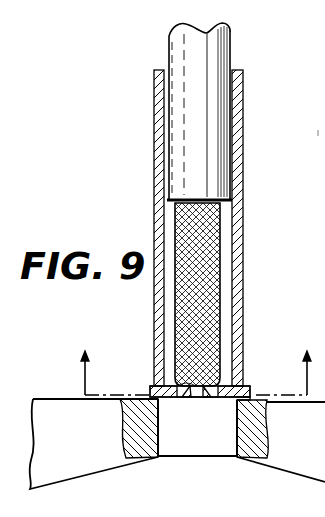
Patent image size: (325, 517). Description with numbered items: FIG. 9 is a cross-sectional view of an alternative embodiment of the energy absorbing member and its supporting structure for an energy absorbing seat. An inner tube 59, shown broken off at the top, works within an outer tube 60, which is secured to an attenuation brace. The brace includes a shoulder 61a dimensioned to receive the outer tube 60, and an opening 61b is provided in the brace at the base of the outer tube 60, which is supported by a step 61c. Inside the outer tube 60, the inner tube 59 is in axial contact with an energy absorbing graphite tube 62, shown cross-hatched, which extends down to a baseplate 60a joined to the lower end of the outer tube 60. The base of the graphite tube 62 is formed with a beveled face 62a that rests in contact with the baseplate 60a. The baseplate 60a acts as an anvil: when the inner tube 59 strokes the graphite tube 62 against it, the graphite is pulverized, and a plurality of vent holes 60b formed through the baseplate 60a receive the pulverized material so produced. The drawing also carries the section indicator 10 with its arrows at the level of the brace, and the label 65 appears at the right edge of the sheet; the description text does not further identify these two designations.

The section line 10- 10 is at (201, 363).
The inner tube 59 is at (218, 56).
The outer tube 60 is at (238, 192).
The baseplate 60a is at (256, 404).
The vent holes 60b is at (192, 398).
The shoulder 61a is at (250, 395).
The opening 61b is at (233, 451).
The step 61c is at (131, 404).
The energy absorbing graphite tube 62 is at (200, 238).
The beveled face 62a is at (188, 378).
The wall 65 is at (315, 170).